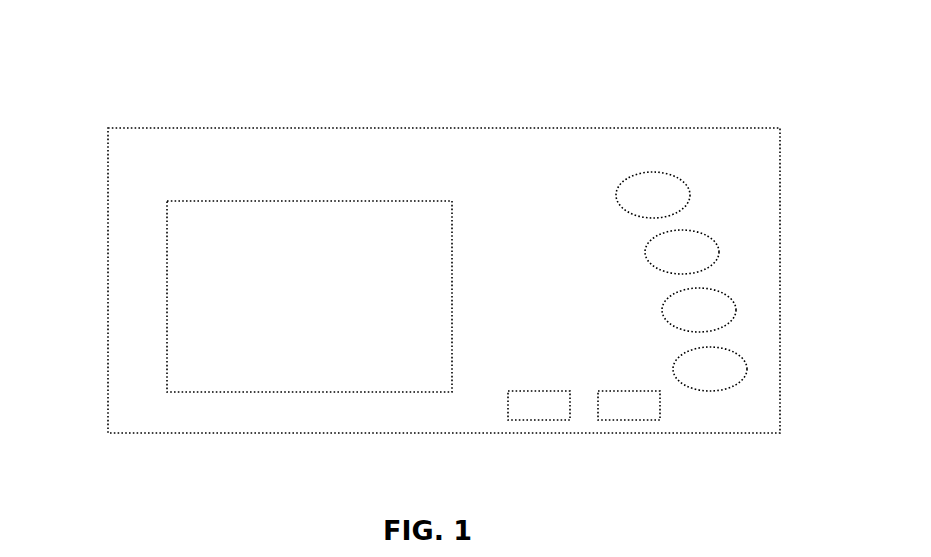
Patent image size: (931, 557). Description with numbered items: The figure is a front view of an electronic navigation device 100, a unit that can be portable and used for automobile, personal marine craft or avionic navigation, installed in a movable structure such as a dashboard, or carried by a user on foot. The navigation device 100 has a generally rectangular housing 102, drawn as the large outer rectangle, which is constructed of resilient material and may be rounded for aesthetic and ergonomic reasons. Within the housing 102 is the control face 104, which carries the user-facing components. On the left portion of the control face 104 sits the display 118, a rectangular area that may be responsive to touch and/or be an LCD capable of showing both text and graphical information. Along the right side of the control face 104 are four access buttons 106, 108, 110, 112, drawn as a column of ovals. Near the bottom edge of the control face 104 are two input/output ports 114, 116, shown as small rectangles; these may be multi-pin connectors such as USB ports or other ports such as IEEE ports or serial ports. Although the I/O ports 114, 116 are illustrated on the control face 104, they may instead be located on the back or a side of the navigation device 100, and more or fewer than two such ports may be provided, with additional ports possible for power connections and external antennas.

The electronic navigation device 100 is at (137, 47).
The housing 102 is at (176, 127).
The control face 104 is at (374, 138).
The access button 106 is at (683, 193).
The access button 108 is at (720, 250).
The access button 110 is at (732, 311).
The access button 112 is at (745, 370).
The input/output port 114 is at (540, 413).
The input/output port 116 is at (633, 413).
The display 118 is at (170, 298).